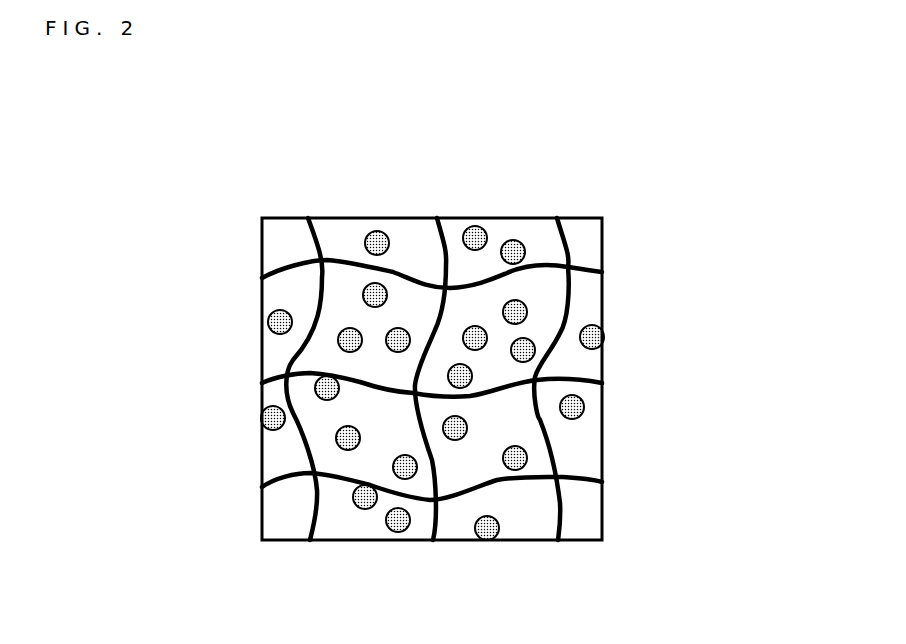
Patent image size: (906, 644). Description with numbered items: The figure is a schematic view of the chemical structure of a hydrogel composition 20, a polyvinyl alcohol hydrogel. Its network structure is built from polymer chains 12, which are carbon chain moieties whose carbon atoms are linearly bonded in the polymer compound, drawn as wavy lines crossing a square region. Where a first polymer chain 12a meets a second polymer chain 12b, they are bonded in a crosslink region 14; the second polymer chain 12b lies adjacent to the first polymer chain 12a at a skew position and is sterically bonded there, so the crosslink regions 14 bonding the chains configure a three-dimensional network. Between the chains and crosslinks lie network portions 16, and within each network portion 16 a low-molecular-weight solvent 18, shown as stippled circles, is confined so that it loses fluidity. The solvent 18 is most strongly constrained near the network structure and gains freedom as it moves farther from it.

The composite material 20 is at (258, 189).
The polymer chain 12 is at (712, 135).
The first polymer chain 12a is at (439, 228).
The second polymer chain 12b is at (587, 377).
The crosslink region 14 is at (412, 417).
The network portion 16 is at (537, 458).
The solvent 18 is at (515, 470).